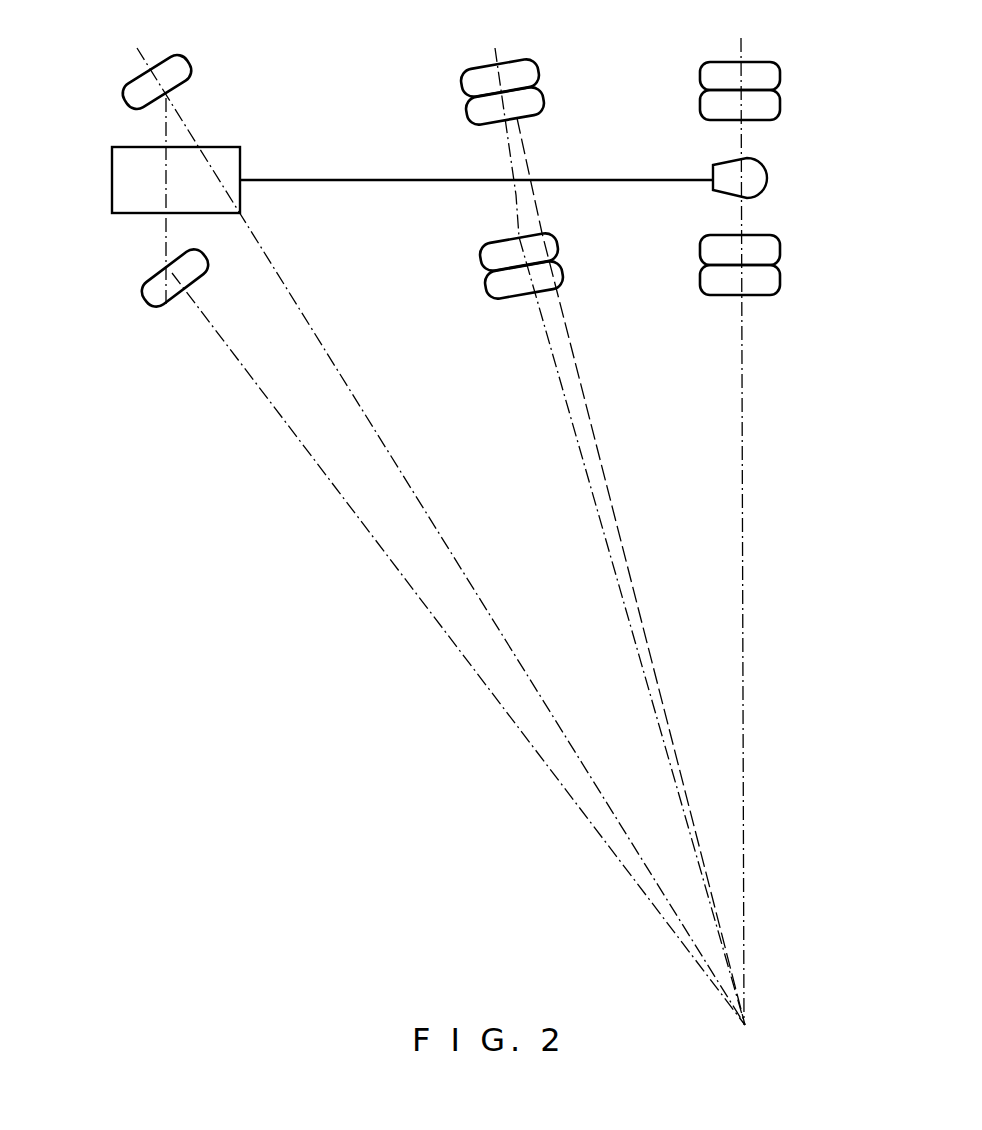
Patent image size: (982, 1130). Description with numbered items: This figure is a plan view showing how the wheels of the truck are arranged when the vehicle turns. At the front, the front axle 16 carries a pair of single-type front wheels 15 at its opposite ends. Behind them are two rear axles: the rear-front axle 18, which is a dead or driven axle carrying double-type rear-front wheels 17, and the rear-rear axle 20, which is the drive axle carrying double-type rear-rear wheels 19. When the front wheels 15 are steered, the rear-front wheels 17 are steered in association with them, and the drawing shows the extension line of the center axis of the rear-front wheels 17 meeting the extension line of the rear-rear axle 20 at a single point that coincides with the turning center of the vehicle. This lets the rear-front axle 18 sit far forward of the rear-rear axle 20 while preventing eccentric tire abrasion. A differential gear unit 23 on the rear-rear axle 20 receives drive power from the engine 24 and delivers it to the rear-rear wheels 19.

The front wheels 15 is at (129, 80).
The front axle 16 is at (163, 232).
The rear-front wheels 17 is at (527, 67).
The rear-front axle 18 is at (513, 172).
The rear-rear wheels 19 is at (782, 68).
The rear-rear axle 20 is at (747, 136).
The differential gear unit 23 is at (762, 190).
The engine 24 is at (234, 147).